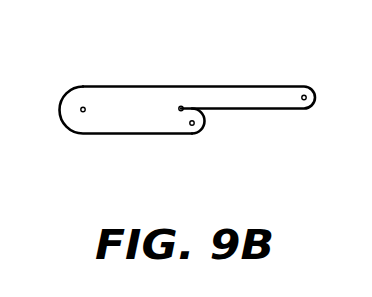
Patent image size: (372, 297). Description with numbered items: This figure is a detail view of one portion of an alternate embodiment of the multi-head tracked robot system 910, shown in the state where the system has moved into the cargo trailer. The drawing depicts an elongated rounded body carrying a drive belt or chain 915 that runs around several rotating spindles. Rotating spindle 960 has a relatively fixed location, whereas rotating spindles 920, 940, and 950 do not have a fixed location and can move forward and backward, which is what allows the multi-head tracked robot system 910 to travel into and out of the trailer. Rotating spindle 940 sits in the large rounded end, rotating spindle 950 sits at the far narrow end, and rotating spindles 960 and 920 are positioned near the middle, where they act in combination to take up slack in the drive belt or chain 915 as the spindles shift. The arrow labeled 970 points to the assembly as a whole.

The multi-head tracked robot system 910 is at (60, 108).
The drive belt or chain 915 is at (177, 86).
The rotating spindle 920 is at (192, 126).
The rotating spindle 940 is at (85, 105).
The rotating spindle 950 is at (305, 100).
The rotating spindle 960 is at (181, 111).
The assembly 970 is at (263, 64).